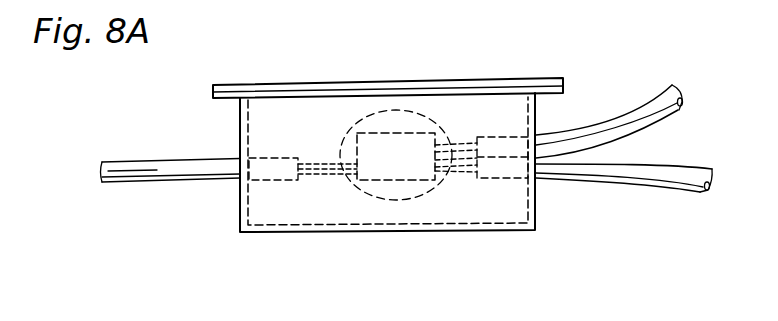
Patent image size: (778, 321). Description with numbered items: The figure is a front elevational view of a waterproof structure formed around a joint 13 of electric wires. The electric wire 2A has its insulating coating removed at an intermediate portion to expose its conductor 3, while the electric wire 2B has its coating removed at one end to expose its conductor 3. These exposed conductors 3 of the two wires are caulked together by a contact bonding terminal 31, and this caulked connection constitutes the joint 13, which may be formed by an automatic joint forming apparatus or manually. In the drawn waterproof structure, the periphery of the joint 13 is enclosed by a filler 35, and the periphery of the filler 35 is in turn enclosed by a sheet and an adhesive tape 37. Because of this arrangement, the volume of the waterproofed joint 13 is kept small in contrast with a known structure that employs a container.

The first cable 2A is at (165, 173).
The second cables 2B is at (610, 130).
The wires 3 is at (313, 160).
The connection portion 13 is at (333, 190).
The circuit unit 31 is at (403, 172).
The housing 35 is at (480, 198).
The mounting plate 37 is at (420, 82).